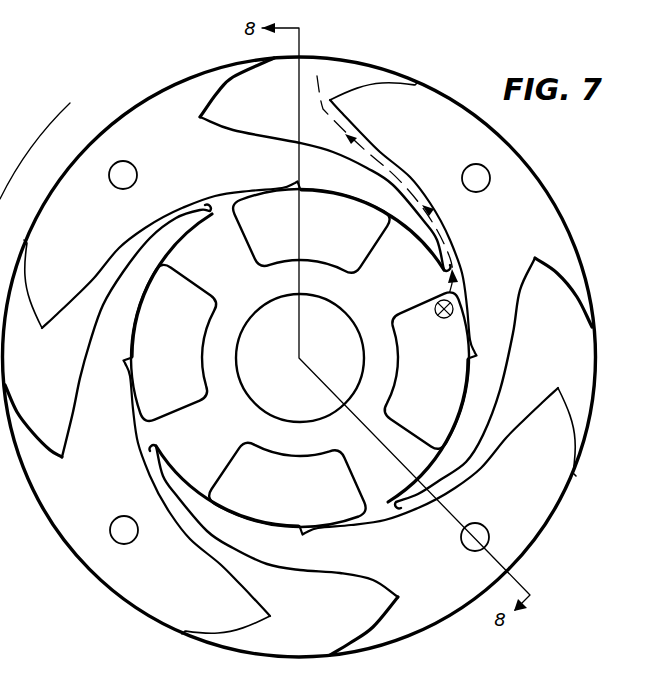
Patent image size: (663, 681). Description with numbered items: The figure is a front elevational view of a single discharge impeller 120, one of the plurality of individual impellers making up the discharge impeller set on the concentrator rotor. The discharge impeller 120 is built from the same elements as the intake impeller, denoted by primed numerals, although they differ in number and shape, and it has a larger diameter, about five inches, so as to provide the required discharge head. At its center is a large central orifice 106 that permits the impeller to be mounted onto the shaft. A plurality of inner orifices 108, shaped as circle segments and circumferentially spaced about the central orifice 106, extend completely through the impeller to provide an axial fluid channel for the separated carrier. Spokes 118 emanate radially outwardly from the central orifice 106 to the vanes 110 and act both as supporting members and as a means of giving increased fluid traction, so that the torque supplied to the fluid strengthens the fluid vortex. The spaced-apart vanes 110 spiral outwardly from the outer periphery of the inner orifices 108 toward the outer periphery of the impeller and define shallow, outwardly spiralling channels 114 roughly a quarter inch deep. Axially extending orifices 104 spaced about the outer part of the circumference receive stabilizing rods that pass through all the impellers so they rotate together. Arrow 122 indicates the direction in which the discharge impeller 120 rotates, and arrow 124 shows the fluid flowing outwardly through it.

The discharge impeller 120 is at (532, 159).
The arrow indicating direction of rotation 122 is at (60, 113).
The arrow indicating fluid flow 124 is at (334, 52).
The orifices 104 is at (128, 163).
The central orifice 106 is at (253, 372).
The inner orifices 108 is at (309, 237).
The vanes 110 is at (182, 174).
The channels 114 is at (251, 115).
The spokes 118 is at (196, 273).